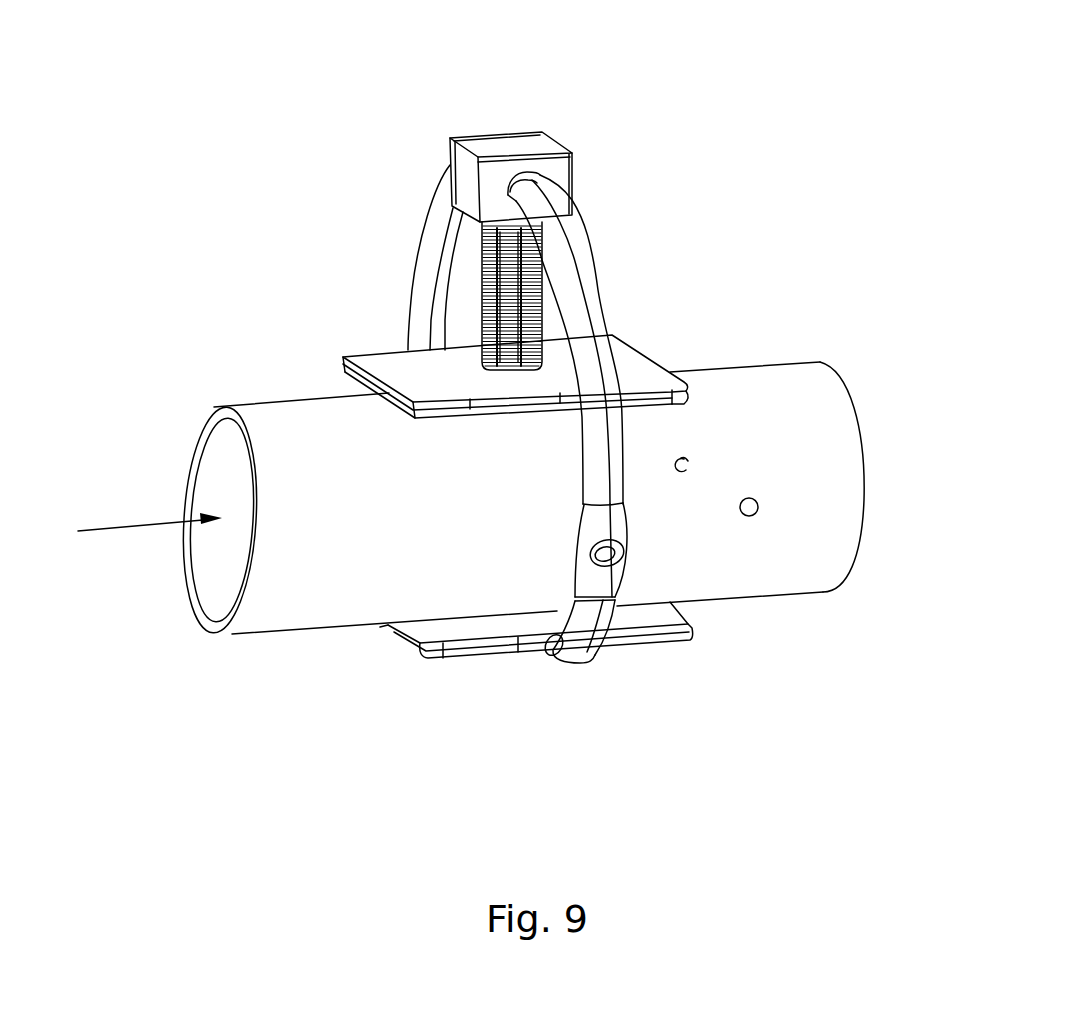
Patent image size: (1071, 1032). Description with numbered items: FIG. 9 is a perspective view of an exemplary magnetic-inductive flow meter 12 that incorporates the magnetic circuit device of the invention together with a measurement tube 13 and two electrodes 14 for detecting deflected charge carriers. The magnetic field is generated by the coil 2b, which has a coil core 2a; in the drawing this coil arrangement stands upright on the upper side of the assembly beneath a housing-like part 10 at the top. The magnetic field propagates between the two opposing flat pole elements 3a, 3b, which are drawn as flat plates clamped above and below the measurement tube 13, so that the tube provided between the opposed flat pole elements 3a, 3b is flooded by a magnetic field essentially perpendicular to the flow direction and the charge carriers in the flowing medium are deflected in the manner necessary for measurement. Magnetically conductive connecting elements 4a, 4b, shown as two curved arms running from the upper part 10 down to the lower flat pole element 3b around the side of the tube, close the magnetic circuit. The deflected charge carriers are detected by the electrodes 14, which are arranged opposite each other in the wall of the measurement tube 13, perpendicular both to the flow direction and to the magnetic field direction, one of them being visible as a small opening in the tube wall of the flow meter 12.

The housing 10 is at (465, 180).
The magnetically conductive connecting element 4a is at (428, 217).
The magnetically conductive connecting element 4b is at (573, 215).
The coil core 2a is at (486, 312).
The coil 2b is at (486, 284).
The flat pole element 3a is at (620, 362).
The flat pole element 3b is at (499, 622).
The magnetic-inductive flow meter 12 is at (233, 688).
The measurement tube 13 is at (252, 423).
The electrodes 14 is at (683, 473).